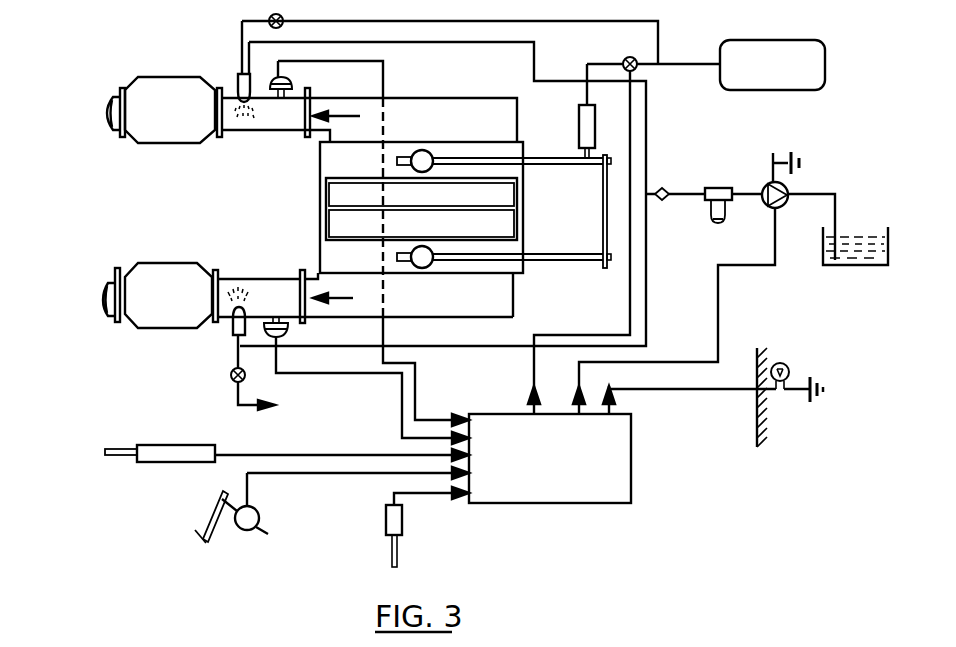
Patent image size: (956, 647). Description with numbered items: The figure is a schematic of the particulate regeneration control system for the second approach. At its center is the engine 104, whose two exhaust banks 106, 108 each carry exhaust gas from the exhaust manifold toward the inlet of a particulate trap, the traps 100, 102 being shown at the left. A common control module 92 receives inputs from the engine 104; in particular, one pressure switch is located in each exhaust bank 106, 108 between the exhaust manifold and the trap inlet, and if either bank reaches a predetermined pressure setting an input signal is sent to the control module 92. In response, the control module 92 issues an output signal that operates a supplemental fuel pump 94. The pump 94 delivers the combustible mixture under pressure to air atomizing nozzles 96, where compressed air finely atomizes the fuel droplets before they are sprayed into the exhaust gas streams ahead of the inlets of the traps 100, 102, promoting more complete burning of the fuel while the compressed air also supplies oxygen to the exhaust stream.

The common control module 92 is at (613, 469).
The supplemental fuel pump 94 is at (765, 186).
The air atomizing nozzles 96 is at (243, 88).
The trap 100 is at (176, 132).
The trap 102 is at (170, 278).
The engine 104 is at (327, 160).
The exhaust bank 106 is at (450, 118).
The exhaust bank 108 is at (498, 300).